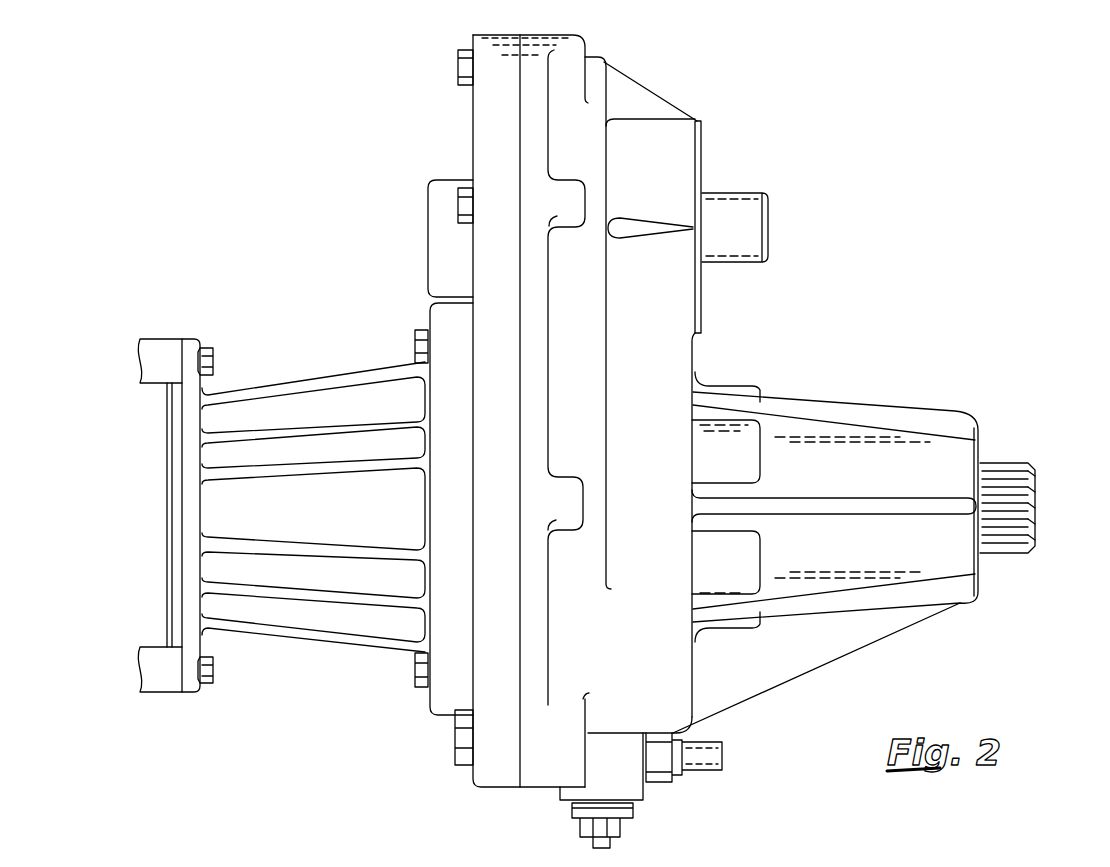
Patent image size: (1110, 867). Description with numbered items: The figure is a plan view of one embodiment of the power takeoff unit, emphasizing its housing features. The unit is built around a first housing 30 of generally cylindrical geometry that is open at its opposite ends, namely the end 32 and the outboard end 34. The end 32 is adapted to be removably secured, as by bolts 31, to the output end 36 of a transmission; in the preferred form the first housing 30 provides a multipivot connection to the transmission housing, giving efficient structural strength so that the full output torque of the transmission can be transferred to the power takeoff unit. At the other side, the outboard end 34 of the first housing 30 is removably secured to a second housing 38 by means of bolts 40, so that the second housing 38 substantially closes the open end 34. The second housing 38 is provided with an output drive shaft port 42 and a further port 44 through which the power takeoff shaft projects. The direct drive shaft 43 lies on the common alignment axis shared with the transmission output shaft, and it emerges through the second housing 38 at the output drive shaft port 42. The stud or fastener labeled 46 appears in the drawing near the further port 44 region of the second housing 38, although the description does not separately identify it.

The first housing 30 is at (320, 508).
The bolts 31 is at (214, 358).
The end 32 is at (163, 446).
The outboard end 34 is at (477, 500).
The output end 36 is at (152, 694).
The second housing 38 is at (590, 430).
The bolts 40 is at (418, 340).
The output drive shaft port 42 is at (986, 580).
The direct drive shaft 43 is at (1036, 499).
The further port 44 is at (710, 302).
The stud 46 is at (753, 218).